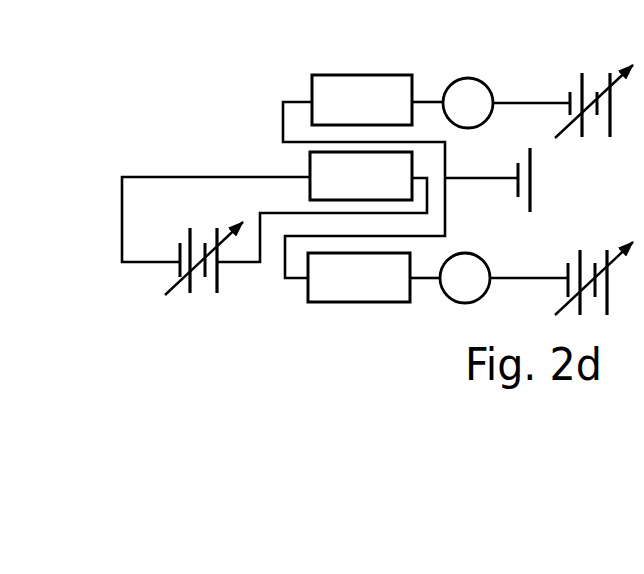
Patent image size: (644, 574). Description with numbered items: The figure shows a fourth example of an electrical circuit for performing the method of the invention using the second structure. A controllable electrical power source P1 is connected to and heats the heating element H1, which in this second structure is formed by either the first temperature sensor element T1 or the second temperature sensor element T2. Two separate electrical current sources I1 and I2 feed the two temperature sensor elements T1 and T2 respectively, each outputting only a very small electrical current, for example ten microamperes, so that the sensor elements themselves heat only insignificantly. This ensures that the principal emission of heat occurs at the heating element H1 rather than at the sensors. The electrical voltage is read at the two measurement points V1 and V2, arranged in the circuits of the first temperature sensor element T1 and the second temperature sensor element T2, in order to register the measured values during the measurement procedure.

The second temperature sensor element T2 is at (362, 100).
The heating element H1 is at (361, 176).
The first temperature sensor element T1 is at (359, 277).
The measurement point V2 is at (468, 103).
The measurement point V1 is at (465, 278).
The electrical current source I2 is at (594, 87).
The electrical current source I1 is at (594, 262).
The controllable electrical power source P1 is at (204, 239).